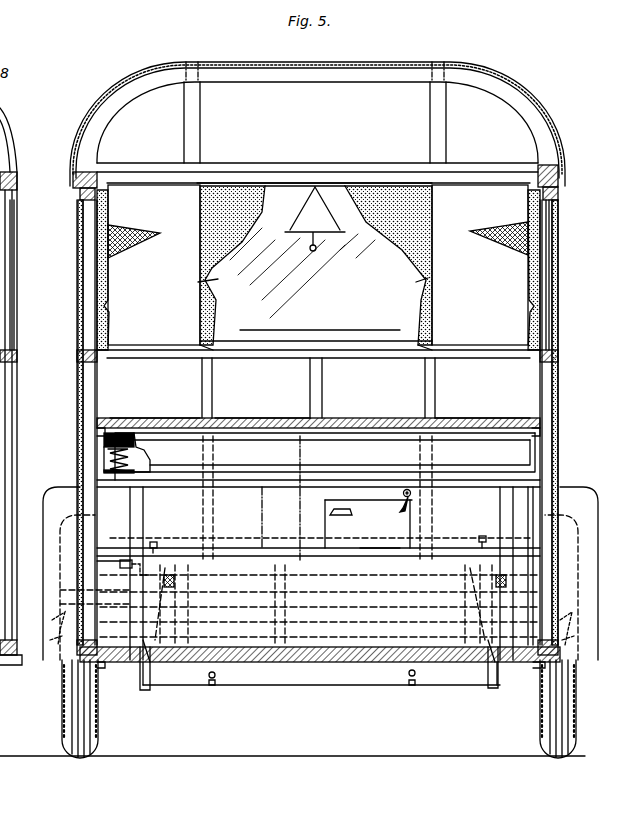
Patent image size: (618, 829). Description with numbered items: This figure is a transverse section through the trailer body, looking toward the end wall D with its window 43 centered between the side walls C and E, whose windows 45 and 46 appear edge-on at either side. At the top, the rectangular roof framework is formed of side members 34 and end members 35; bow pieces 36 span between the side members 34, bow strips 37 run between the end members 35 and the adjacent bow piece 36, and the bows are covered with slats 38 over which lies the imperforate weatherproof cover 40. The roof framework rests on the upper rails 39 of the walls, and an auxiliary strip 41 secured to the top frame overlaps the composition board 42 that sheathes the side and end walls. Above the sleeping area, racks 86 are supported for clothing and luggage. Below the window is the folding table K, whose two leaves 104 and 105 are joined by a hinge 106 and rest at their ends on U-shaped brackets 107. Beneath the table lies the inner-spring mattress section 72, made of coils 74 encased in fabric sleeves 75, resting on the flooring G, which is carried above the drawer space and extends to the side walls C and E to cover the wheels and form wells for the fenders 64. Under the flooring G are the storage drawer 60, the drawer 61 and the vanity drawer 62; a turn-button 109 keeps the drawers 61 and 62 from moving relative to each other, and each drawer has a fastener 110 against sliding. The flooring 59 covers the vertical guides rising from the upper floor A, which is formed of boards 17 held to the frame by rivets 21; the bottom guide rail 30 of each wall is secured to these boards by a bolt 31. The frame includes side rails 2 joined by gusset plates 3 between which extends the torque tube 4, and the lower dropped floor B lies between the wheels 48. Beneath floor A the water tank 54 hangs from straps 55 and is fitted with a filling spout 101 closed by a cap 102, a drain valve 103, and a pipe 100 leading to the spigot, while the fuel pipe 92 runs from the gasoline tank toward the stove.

The cover 40 is at (435, 62).
The slats 38 is at (518, 84).
The bow strips 37 is at (308, 111).
The bow pieces 36 is at (397, 80).
The end members 35 is at (376, 162).
The side members 34 is at (97, 165).
The upper rails 39 is at (75, 193).
The composition board 42 is at (558, 386).
The auxiliary strip 41 is at (83, 357).
The side wall C is at (20, 268).
The window 45 is at (48, 279).
The side wall E is at (548, 227).
The window 46 is at (556, 264).
The end wall D is at (160, 318).
The racks 86 is at (150, 236).
The window 43 is at (314, 266).
The table K is at (239, 418).
The brackets 107 is at (103, 418).
The table leaf 105 is at (180, 412).
The hinge 106 is at (298, 418).
The table leaf 104 is at (455, 418).
The mattress section 72 is at (356, 436).
The flooring 59 is at (383, 471).
The fabric sleeves 75 is at (105, 456).
The coils 74 is at (105, 466).
The flooring G is at (298, 487).
The storage drawer 60 is at (300, 538).
The vanity drawer 62 is at (368, 500).
The turn-button 109 is at (410, 504).
The torque tube 4 is at (372, 541).
The storage drawer 61 is at (378, 541).
The fastener 110 is at (158, 545).
The fenders 64 is at (586, 487).
The pipe 92 is at (80, 561).
The cap 102 is at (60, 590).
The filling spout 101 is at (60, 604).
The straps 55 is at (208, 580).
The floor A is at (305, 552).
The gusset plates 3 is at (180, 608).
The bolt 31 is at (540, 636).
The floor B is at (320, 682).
The boards 17 is at (297, 667).
The water tank 54 is at (360, 670).
The rivet 21 is at (145, 684).
The side rails 2 is at (135, 686).
The pipe 100 is at (212, 681).
The drain valve 103 is at (412, 681).
The bottom guide rail 30 is at (80, 645).
The wheels 48 is at (96, 737).